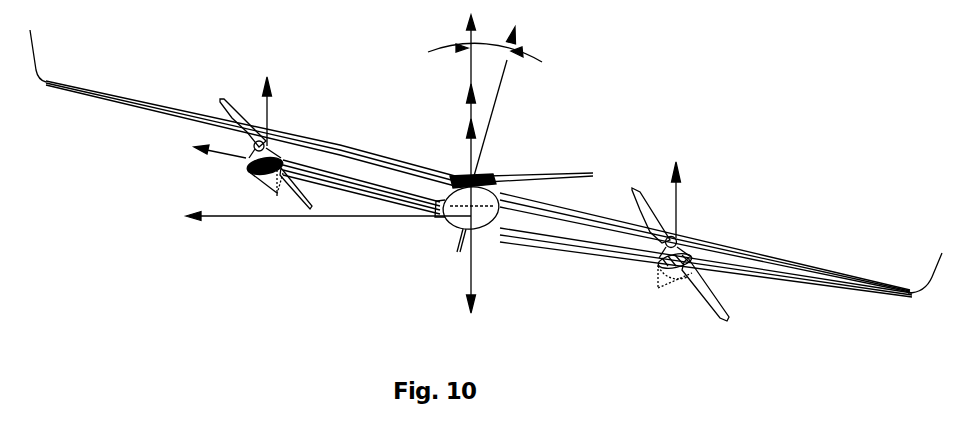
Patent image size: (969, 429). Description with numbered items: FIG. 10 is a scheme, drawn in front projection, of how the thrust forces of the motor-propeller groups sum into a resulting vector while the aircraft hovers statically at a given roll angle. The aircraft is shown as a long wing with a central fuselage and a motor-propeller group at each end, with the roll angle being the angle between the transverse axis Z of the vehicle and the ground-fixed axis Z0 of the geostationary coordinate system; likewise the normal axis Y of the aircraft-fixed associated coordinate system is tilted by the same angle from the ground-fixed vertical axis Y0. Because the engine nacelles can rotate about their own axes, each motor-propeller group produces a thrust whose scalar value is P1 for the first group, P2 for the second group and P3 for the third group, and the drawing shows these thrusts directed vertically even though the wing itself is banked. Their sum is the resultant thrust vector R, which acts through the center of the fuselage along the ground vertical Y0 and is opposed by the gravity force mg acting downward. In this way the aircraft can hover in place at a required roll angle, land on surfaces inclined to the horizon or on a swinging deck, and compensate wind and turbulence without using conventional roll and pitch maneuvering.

The scalar value of the MPG thrust vector (1) P1 is at (694, 166).
The scalar value of the MPG thrust vector (2) P2 is at (284, 81).
The scalar value of the MPG thrust vector (3) P3 is at (458, 119).
The resultant thrust vector R is at (458, 85).
The gravity force mg is at (489, 302).
The transverse axis OZ of the associated coordinate system Z is at (220, 164).
The O0Z0 axis of the geostationary coordinate system Z0 is at (328, 206).
The normal axis OY of the associated coordinate system Y is at (503, 100).
The O0Y0 axis of the geostationary coordinate system Y0 is at (484, 155).